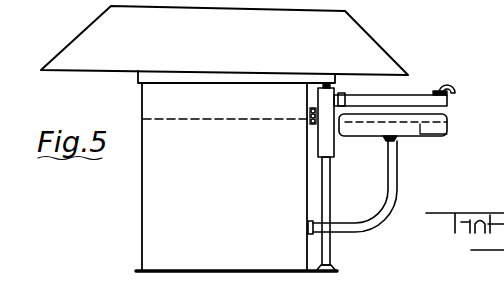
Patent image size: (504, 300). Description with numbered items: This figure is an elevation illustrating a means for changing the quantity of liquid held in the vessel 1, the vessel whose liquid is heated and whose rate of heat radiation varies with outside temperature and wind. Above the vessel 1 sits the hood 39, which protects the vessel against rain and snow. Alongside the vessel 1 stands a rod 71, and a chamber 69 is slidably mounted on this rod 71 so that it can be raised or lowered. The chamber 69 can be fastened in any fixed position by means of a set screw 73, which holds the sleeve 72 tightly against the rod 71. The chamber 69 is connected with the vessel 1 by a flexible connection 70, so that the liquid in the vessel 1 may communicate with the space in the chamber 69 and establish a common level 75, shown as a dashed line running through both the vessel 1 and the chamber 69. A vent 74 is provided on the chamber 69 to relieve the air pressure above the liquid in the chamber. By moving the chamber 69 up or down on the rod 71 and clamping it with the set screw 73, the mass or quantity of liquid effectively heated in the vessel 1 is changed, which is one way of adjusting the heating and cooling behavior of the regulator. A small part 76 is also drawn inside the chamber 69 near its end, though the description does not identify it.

The vessel 1 is at (157, 183).
The hood 39 is at (101, 36).
The chamber 69 is at (447, 130).
The flexible connection 70 is at (395, 186).
The rod 71 is at (330, 188).
The sleeve 72 is at (334, 148).
The set screw 73 is at (313, 125).
The vent 74 is at (450, 83).
The common level 75 is at (205, 118).
The bracket 76 is at (427, 128).